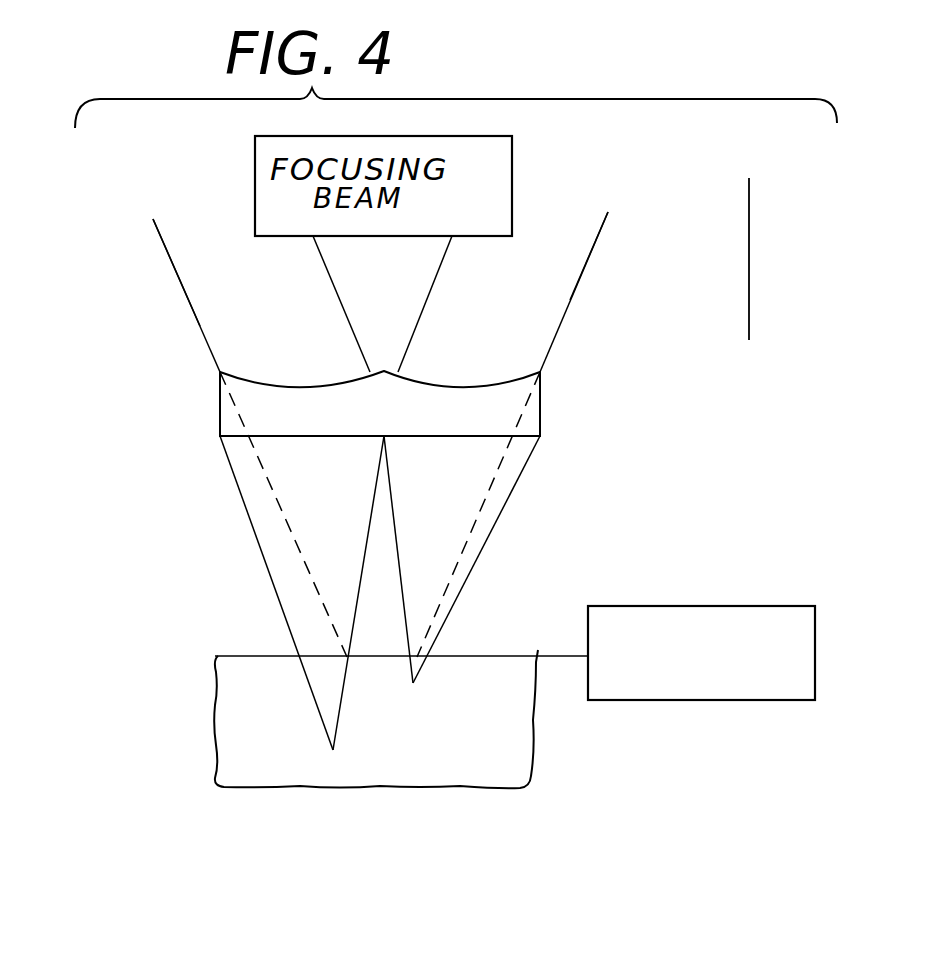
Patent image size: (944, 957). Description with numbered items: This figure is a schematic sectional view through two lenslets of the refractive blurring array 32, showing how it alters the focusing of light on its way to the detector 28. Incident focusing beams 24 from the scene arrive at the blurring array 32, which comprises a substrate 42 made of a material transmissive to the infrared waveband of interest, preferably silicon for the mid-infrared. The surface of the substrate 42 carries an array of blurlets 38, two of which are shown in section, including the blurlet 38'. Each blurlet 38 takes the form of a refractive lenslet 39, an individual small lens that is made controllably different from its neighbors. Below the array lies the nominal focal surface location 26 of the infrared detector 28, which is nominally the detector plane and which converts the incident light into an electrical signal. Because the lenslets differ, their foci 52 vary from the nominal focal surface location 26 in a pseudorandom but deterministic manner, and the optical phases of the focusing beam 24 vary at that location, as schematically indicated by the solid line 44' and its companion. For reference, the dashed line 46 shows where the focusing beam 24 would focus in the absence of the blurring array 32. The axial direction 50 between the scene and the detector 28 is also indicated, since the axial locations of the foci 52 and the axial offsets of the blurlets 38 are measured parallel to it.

The focusing beam 24 is at (600, 237).
The nominal focal surface location 26 is at (243, 656).
The infrared detector 28 is at (232, 684).
The blurring array 32 is at (220, 403).
The blurlets 38 is at (202, 295).
The first blurlet 38' is at (199, 299).
The refractive lenslets 39 is at (422, 380).
The substrate 42 is at (507, 412).
The solid line 44' is at (254, 593).
The dashed line 46 is at (256, 456).
The axial direction 50 is at (750, 250).
The foci 52 is at (331, 752).